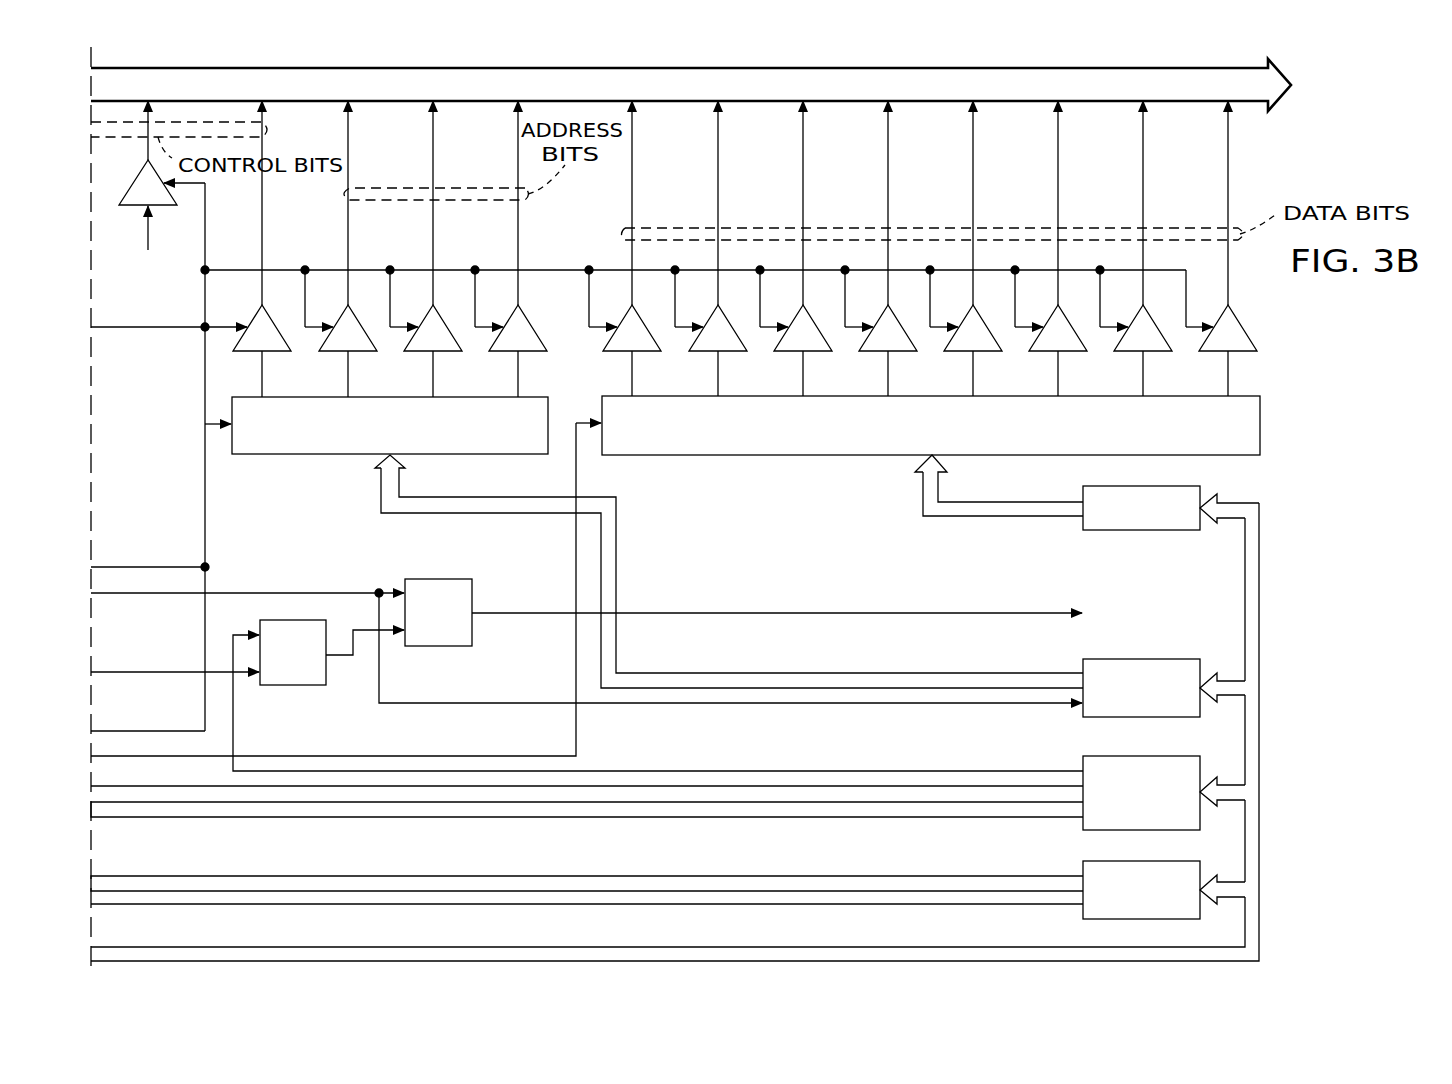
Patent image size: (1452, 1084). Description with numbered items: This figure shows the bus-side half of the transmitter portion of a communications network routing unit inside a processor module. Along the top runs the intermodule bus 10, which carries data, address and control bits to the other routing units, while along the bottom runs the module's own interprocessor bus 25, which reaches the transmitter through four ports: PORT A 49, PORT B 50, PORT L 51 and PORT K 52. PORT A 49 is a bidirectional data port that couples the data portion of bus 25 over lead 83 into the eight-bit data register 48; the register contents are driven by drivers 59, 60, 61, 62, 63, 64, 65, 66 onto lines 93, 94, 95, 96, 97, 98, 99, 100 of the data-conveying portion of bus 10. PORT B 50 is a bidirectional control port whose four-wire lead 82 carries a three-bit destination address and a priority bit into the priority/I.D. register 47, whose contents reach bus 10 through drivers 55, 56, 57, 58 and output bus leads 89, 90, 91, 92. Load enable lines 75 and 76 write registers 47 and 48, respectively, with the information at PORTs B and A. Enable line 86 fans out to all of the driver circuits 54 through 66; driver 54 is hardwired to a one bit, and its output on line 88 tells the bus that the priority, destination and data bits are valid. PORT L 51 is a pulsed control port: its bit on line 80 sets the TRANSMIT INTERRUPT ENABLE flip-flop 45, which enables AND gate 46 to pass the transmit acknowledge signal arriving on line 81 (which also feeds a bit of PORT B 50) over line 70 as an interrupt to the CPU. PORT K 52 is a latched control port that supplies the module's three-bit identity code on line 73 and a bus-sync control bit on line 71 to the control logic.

The intermodule bus 10 is at (1050, 68).
The interprocessor bus 25 is at (470, 955).
The TRANSMIT INTERRUPT ENABLE flip-flop 45 is at (290, 628).
The AND gate 46 is at (467, 590).
The priority/I.D. register 47 is at (302, 454).
The data register 48 is at (1250, 420).
The PORT A 49 is at (1097, 530).
The PORT B 50 is at (1095, 712).
The PORT L 51 is at (1085, 765).
The PORT K 52 is at (1085, 866).
The driver 54 is at (142, 198).
The driver 55 is at (250, 345).
The driver 56 is at (336, 345).
The driver 57 is at (421, 345).
The driver 58 is at (506, 345).
The driver 59 is at (620, 345).
The driver 60 is at (706, 345).
The driver 61 is at (791, 345).
The driver 62 is at (876, 345).
The driver 63 is at (961, 345).
The driver 64 is at (1046, 345).
The driver 65 is at (1131, 345).
The driver 66 is at (1216, 345).
The line 70 is at (720, 612).
The line 71 is at (905, 876).
The line 73 is at (660, 905).
The load enable line 75 is at (170, 567).
The load enable line 76 is at (590, 756).
The line 80 is at (230, 766).
The line 81 is at (175, 593).
The lead 82 is at (616, 545).
The lead 83 is at (990, 516).
The line 86 is at (582, 270).
The line 88 is at (147, 158).
The output bus lead 89 is at (262, 222).
The output bus lead 90 is at (348, 222).
The output bus lead 91 is at (433, 222).
The output bus lead 92 is at (518, 222).
The line 93 is at (632, 200).
The line 94 is at (718, 200).
The line 95 is at (803, 200).
The line 96 is at (888, 200).
The line 97 is at (973, 200).
The line 98 is at (1058, 200).
The line 99 is at (1143, 200).
The line 100 is at (1228, 183).